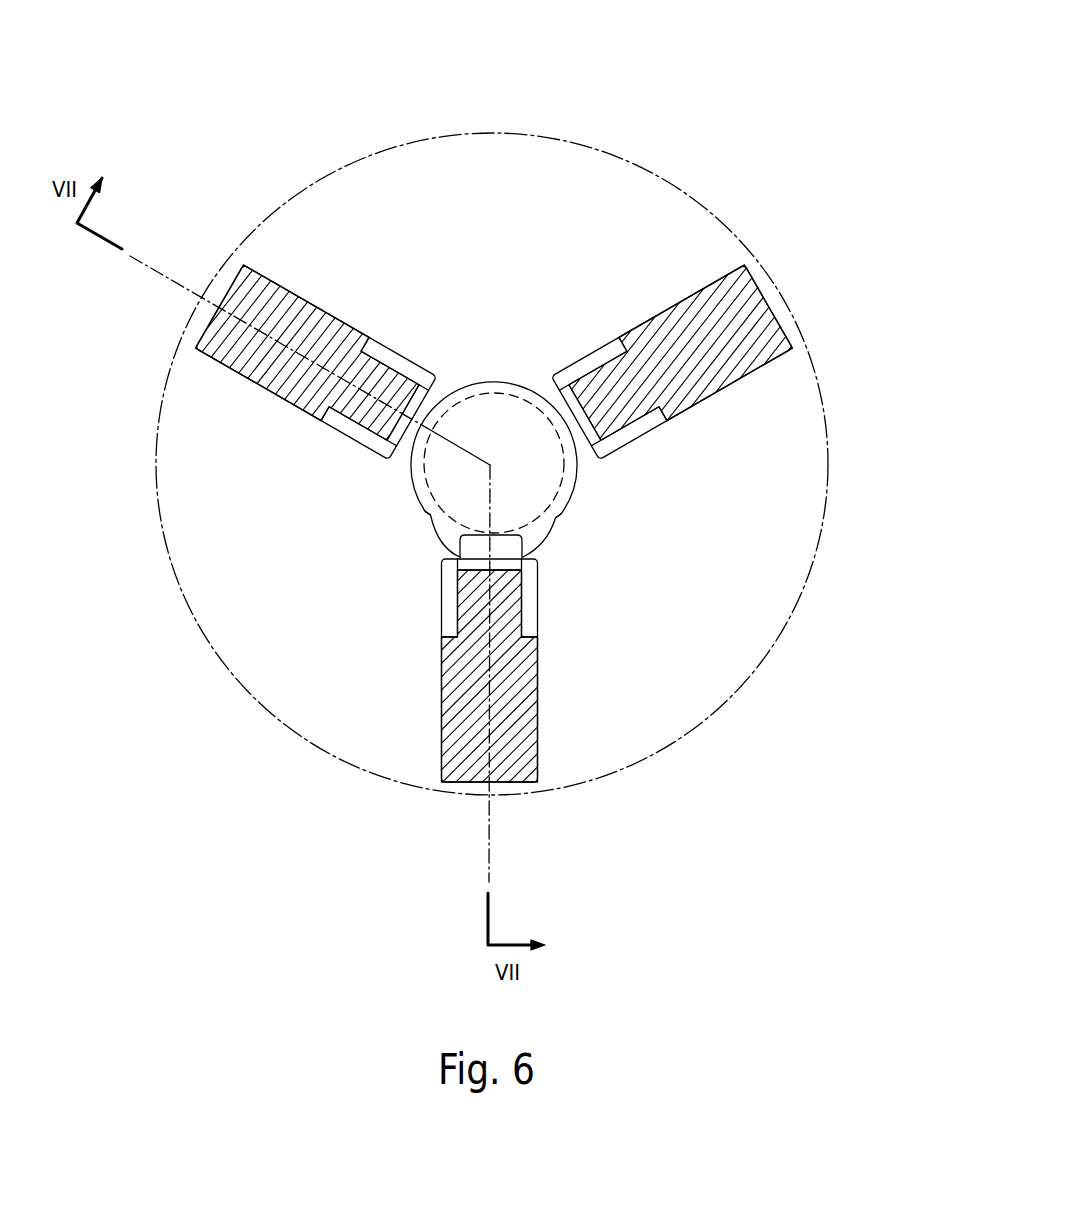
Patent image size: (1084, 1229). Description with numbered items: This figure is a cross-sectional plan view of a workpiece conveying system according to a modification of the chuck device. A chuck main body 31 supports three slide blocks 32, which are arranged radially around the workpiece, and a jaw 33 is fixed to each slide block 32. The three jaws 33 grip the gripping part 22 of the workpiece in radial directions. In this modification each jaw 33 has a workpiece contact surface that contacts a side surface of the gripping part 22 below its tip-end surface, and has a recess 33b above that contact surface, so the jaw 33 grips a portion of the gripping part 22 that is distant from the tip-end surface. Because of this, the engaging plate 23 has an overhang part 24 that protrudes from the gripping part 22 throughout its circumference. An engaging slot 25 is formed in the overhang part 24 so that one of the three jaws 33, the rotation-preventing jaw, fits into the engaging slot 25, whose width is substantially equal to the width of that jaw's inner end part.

The gripping part 22 is at (478, 382).
The engaging plate 23 is at (533, 478).
The overhang part 24 is at (431, 520).
The engaging slot 25 is at (512, 549).
The chuck main body 31 is at (587, 145).
The slide block 32 is at (415, 364).
The jaw 33 is at (707, 292).
The recess 33b is at (397, 453).